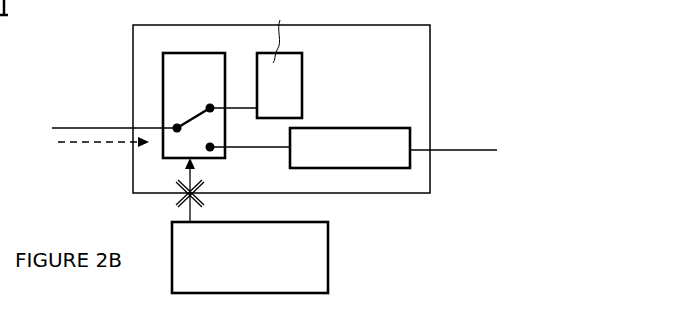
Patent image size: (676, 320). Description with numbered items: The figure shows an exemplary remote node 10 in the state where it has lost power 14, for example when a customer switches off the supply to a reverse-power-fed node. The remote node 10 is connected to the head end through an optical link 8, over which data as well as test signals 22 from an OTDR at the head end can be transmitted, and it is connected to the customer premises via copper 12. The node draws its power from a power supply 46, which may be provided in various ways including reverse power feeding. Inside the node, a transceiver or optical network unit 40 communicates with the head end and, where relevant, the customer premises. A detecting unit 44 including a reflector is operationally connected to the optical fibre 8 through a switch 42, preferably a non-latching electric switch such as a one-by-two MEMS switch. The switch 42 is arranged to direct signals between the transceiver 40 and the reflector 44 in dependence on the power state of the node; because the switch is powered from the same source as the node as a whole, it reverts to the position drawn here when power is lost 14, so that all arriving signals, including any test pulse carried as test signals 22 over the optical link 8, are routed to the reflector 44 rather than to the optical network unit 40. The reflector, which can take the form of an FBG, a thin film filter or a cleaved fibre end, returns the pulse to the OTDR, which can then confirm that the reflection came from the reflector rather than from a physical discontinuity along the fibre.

The optical link 8 is at (70, 128).
The test signals 22 is at (90, 143).
The remote node 10 is at (395, 85).
The switch 42 is at (226, 105).
The detecting unit including a reflector 44 is at (279, 59).
The optical network unit 40 is at (350, 148).
The copper 12 is at (470, 150).
The loss of power 14 is at (203, 203).
The power supply 46 is at (250, 225).